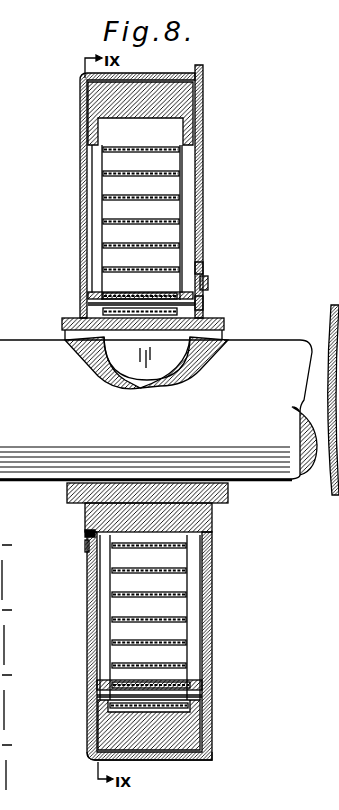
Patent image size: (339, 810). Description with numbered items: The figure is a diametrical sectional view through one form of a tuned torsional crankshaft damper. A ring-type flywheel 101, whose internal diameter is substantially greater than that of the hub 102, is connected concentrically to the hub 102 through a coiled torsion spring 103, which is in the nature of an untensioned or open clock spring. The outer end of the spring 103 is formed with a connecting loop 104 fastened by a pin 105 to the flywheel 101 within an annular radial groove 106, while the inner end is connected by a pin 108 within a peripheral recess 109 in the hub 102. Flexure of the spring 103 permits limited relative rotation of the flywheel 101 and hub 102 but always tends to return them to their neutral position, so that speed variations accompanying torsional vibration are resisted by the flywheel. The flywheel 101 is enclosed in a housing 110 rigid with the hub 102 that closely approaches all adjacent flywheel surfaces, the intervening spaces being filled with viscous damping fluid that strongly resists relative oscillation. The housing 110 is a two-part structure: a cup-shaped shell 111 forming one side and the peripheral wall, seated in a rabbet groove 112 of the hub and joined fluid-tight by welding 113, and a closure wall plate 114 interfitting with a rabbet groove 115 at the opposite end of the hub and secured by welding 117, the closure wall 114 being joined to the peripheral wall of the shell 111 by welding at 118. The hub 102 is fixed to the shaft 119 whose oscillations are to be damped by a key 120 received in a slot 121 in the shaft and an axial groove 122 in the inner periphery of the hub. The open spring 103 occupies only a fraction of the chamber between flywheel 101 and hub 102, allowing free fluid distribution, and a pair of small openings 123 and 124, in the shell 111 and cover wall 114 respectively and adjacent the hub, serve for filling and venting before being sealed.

The ring-type flywheel 101 is at (164, 730).
The hub 102 is at (140, 505).
The coiled torsion spring 103 is at (128, 620).
The connecting loop 104 is at (175, 708).
The pin 105 is at (190, 690).
The annular radial groove 106 is at (165, 118).
The pin 108 is at (108, 290).
The peripheral recess 109 is at (205, 305).
The housing 110 is at (92, 750).
The cup-shaped shell 111 is at (88, 668).
The rabbet groove 112 is at (105, 498).
The welding 113 is at (73, 318).
The closure wall plate 114 is at (203, 195).
The rabbet groove 115 is at (196, 490).
The welding 117 is at (212, 316).
The welding 118 is at (195, 67).
The shaft 119 is at (40, 446).
The key 120 is at (128, 356).
The slot 121 is at (150, 371).
The axial groove 122 is at (80, 338).
The small opening 123 is at (86, 533).
The small opening 124 is at (201, 271).